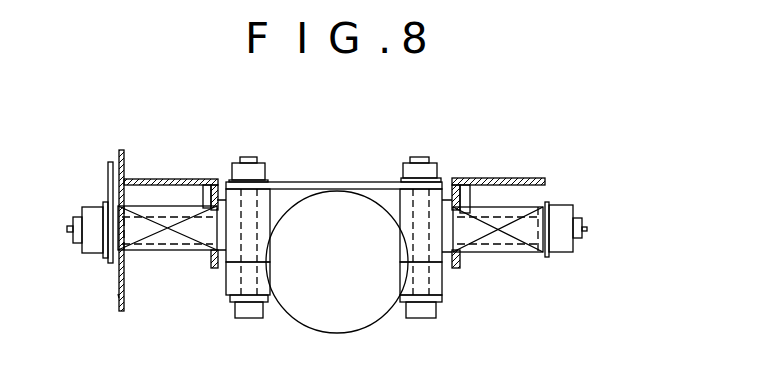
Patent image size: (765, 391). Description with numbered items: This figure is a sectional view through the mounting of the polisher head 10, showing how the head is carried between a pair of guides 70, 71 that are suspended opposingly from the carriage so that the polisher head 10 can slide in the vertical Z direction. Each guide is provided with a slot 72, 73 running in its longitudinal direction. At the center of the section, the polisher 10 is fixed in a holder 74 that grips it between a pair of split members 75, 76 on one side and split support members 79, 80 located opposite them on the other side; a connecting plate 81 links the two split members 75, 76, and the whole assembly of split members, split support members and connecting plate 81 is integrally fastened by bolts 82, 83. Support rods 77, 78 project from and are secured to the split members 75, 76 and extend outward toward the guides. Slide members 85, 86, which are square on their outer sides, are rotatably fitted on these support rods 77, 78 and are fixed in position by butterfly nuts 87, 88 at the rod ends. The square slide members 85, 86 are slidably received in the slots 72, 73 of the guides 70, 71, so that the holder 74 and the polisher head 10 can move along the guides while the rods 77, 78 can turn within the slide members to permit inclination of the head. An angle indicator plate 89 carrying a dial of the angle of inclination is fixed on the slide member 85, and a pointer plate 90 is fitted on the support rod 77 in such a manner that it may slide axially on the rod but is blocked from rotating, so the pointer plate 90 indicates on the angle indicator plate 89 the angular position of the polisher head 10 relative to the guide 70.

The polisher head 10 is at (332, 336).
The guide 70 is at (160, 180).
The guide 71 is at (508, 178).
The slot 72 is at (206, 215).
The slot 73 is at (465, 218).
The holder 74 is at (425, 148).
The split member 75 is at (273, 195).
The split member 76 is at (398, 195).
The support rod 77 is at (165, 243).
The support rod 78 is at (492, 245).
The split support member 79 is at (230, 279).
The split support member 80 is at (437, 288).
The connecting plate 81 is at (309, 186).
The bolt 82 is at (250, 318).
The bolt 83 is at (418, 318).
The slide member 85 is at (139, 255).
The slide member 86 is at (534, 254).
The butterfly nut 87 is at (86, 207).
The butterfly nut 88 is at (562, 210).
The angle indicator plate 89 is at (118, 296).
The pointer plate 90 is at (107, 168).